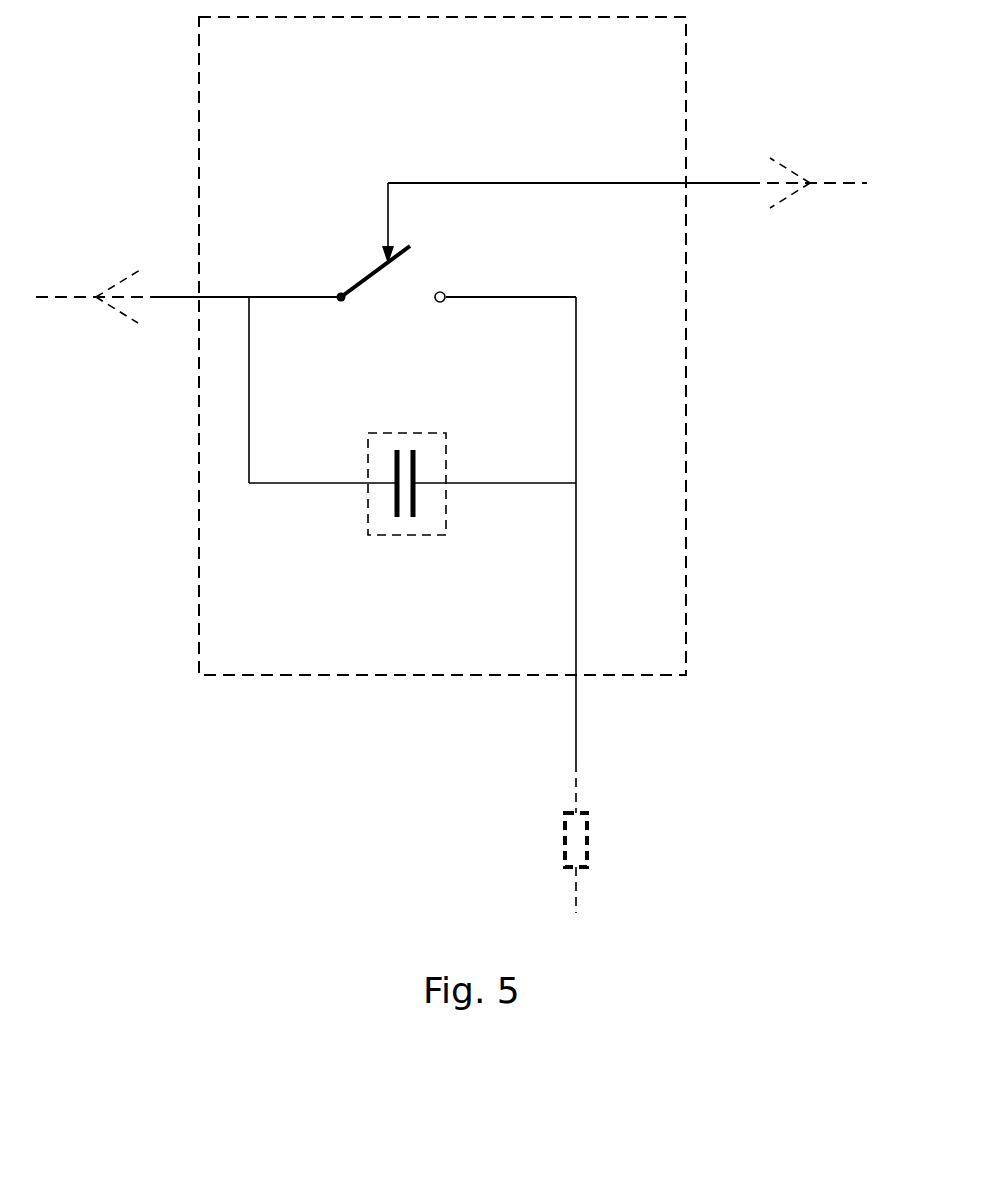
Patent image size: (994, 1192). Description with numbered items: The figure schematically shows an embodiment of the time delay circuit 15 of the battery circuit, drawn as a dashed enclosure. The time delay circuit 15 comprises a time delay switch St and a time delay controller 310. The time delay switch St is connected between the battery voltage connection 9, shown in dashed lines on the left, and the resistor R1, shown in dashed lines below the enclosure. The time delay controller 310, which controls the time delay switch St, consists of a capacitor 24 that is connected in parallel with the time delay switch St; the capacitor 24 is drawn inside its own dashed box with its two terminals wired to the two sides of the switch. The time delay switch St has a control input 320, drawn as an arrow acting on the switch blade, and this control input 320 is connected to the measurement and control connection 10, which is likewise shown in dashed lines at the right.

The time delay circuit 15 is at (412, 681).
The control input 320 is at (372, 206).
The time delay switch St is at (397, 272).
The battery voltage connection 9 is at (121, 328).
The measurement and control connection 10 is at (789, 215).
The capacitor 24 is at (418, 467).
The time delay controller 310 is at (412, 544).
The resistor R1 is at (587, 840).